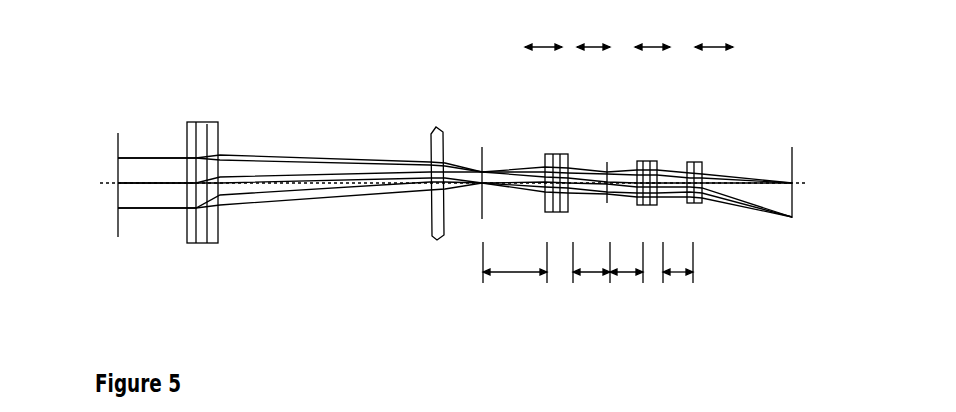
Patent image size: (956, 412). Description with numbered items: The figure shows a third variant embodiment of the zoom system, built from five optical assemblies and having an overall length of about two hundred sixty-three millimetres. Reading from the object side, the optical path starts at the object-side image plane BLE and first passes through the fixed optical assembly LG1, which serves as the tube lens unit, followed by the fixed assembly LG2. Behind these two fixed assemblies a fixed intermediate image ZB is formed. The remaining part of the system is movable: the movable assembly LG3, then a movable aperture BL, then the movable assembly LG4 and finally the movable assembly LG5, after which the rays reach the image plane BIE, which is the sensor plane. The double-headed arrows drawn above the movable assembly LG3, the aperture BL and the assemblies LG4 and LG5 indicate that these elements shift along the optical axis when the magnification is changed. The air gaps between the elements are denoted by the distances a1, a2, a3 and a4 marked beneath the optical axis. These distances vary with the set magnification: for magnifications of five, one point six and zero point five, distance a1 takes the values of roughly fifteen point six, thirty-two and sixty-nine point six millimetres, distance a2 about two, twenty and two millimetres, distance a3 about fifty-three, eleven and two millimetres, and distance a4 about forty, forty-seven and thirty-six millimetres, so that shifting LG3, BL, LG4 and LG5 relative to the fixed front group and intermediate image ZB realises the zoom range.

The image plane BLE is at (143, 154).
The fixed optical assembly (tube lens unit) LG1 is at (205, 113).
The fixed assembly LG2 is at (431, 155).
The fixed intermediate image ZB is at (480, 132).
The movable assembly LG3 is at (553, 143).
The movable aperture BL is at (603, 150).
The movable assembly LG4 is at (645, 153).
The movable assembly LG5 is at (695, 153).
The image plane (sensor plane) BIE is at (782, 163).
The distance a1 is at (515, 278).
The distance a2 is at (591, 278).
The distance a3 is at (626, 278).
The distance a4 is at (679, 278).